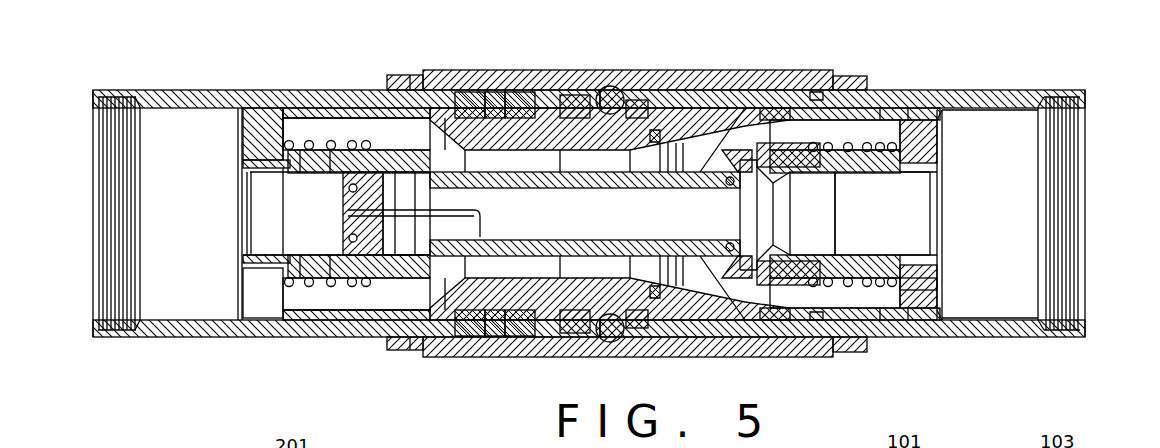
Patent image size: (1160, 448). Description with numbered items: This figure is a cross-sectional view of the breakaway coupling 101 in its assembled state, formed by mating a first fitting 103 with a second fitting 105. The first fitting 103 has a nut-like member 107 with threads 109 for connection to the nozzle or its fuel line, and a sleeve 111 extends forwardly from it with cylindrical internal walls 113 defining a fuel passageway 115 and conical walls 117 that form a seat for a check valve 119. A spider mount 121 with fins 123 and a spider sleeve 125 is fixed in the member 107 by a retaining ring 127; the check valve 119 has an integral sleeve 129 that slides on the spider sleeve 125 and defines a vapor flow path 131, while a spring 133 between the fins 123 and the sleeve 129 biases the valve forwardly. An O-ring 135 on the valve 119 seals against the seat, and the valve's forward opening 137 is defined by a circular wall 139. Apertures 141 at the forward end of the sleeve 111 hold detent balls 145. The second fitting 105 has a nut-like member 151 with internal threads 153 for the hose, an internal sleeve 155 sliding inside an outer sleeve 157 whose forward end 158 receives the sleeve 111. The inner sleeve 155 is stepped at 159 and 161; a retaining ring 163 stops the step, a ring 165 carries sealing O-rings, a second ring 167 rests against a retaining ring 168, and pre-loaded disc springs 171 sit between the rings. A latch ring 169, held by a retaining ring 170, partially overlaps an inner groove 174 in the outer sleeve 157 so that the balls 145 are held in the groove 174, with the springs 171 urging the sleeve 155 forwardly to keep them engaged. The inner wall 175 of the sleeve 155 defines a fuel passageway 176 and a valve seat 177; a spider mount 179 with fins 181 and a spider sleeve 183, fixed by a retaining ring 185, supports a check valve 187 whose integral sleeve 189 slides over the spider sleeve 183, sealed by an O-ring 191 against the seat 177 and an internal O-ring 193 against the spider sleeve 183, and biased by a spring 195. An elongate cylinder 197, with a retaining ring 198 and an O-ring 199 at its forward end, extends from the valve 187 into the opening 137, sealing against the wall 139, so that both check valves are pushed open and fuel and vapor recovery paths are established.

The breakaway coupling 101 is at (627, 187).
The first fitting 103 is at (877, 185).
The second fitting 105 is at (316, 177).
The nut-like member 107 is at (1068, 90).
The threads 109 is at (1081, 118).
The sleeve 111 is at (941, 108).
The internal walls 113 is at (900, 108).
The fuel passageway 115 is at (950, 118).
The conical walls 117 is at (818, 92).
The check valve 119 is at (817, 337).
The spider mount 121 is at (940, 328).
The fins 123 is at (920, 289).
The spider sleeve 125 is at (903, 255).
The retaining ring 127 is at (943, 140).
The integral sleeve 129 is at (880, 337).
The vapor flow path 131 is at (889, 227).
The spring 133 is at (908, 330).
The O-ring 135 is at (733, 330).
The opening 137 is at (752, 240).
The circular wall 139 is at (770, 201).
The apertures 141 is at (657, 330).
The detent balls 145 is at (670, 92).
The nut-like member 151 is at (170, 88).
The internal threads 153 is at (101, 103).
The internal sleeve 155 is at (365, 90).
The outer sleeve 157 is at (542, 92).
The forward end 158 is at (863, 118).
The step 159 is at (483, 330).
The step 161 is at (523, 330).
The retaining ring 163 is at (482, 91).
The ring 165 is at (500, 91).
The second ring 167 is at (596, 92).
The retaining ring 168 is at (571, 330).
The latch ring 169 is at (616, 87).
The retaining ring 170 is at (749, 70).
The wave or disc springs 171 is at (546, 91).
The inner groove 174 is at (635, 100).
The inner wall 175 is at (342, 92).
The fuel passageway 176 is at (268, 108).
The valve seat 177 is at (421, 352).
The spider mount 179 is at (252, 88).
The fins 181 is at (262, 127).
The spider sleeve 183 is at (288, 175).
The retaining ring 185 is at (240, 283).
The check valve 187 is at (333, 330).
The integral sleeve 189 is at (283, 330).
The O-ring 191 is at (375, 330).
The internal O-ring 193 is at (290, 330).
The spring 195 is at (300, 330).
The elongate cylinder 197 is at (457, 337).
The retaining ring 198 is at (630, 172).
The O-ring 199 is at (729, 189).